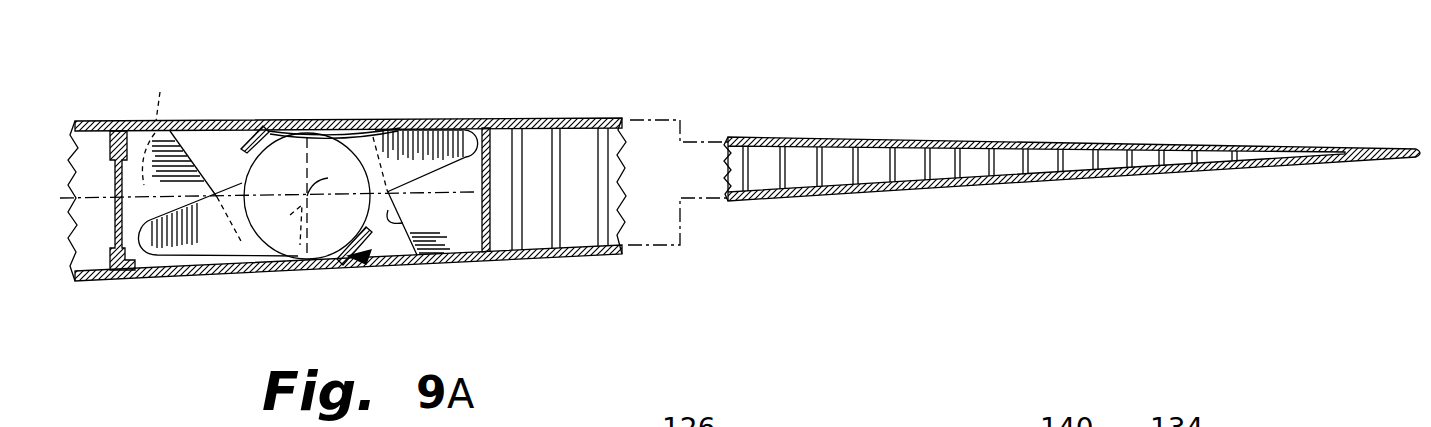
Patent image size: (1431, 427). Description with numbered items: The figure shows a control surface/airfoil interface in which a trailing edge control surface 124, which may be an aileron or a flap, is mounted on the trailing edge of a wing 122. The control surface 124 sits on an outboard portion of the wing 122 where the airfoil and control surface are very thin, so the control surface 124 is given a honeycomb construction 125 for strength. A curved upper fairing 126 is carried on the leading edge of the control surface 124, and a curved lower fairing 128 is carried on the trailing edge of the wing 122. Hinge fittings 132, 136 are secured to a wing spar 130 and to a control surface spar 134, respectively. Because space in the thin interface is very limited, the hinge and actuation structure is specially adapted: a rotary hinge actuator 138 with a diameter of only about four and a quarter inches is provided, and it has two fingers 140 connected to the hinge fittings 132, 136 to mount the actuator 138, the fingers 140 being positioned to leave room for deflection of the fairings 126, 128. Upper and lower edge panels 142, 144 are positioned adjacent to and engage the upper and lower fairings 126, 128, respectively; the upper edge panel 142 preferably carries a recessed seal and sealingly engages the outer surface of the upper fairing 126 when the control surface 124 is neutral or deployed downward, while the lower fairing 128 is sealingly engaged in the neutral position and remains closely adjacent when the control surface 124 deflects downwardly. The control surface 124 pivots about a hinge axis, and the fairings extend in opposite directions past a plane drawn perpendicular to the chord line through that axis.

The wing 122 is at (93, 123).
The control surface 124 is at (960, 177).
The honeycomb construction 125 is at (1110, 162).
The upper fairing 126 is at (243, 125).
The lower fairing 128 is at (372, 246).
The wing spar 130 is at (110, 247).
The hinge fitting 132 is at (217, 123).
The control surface spar 134 is at (490, 228).
The hinge fitting 136 is at (407, 227).
The rotary hinge actuator 138 is at (273, 260).
The fingers 140 is at (180, 245).
The upper edge panel 142 is at (245, 120).
The lower edge panel 144 is at (360, 263).